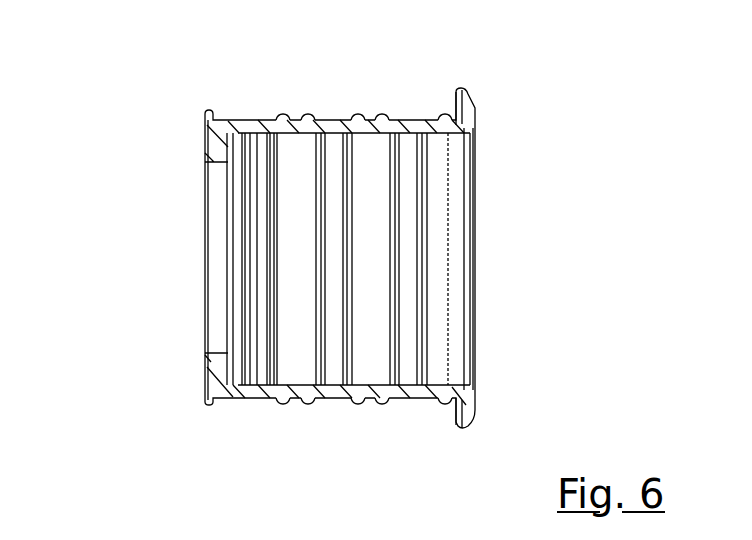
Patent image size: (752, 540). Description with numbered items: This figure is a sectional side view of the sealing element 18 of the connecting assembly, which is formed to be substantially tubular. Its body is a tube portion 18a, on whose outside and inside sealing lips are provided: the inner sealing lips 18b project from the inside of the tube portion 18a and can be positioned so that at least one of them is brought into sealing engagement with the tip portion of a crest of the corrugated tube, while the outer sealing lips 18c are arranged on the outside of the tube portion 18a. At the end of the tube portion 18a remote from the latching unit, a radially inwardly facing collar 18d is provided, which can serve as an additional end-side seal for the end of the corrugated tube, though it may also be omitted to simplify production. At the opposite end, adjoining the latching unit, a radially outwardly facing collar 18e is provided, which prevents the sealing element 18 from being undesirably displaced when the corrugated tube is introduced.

The sealing element 18 is at (150, 86).
The tube portion 18a is at (342, 128).
The inner sealing lips 18b is at (395, 137).
The outer sealing lips 18c is at (310, 117).
The radially inwardly facing collar 18d is at (217, 365).
The radially outwardly facing collar 18e is at (462, 90).